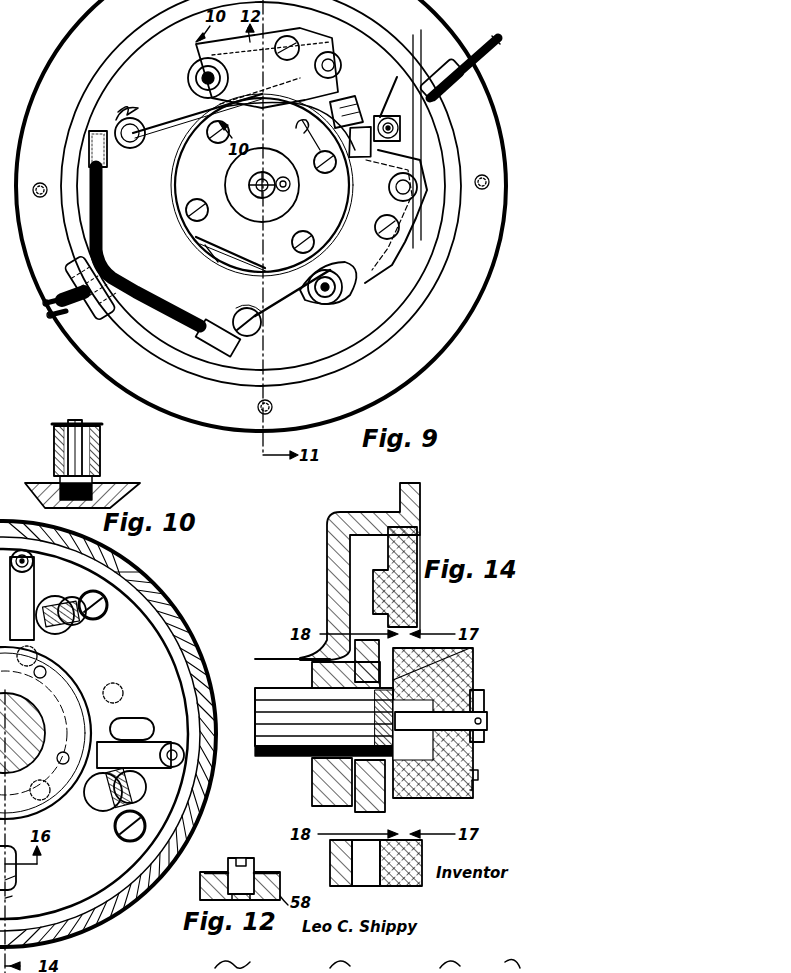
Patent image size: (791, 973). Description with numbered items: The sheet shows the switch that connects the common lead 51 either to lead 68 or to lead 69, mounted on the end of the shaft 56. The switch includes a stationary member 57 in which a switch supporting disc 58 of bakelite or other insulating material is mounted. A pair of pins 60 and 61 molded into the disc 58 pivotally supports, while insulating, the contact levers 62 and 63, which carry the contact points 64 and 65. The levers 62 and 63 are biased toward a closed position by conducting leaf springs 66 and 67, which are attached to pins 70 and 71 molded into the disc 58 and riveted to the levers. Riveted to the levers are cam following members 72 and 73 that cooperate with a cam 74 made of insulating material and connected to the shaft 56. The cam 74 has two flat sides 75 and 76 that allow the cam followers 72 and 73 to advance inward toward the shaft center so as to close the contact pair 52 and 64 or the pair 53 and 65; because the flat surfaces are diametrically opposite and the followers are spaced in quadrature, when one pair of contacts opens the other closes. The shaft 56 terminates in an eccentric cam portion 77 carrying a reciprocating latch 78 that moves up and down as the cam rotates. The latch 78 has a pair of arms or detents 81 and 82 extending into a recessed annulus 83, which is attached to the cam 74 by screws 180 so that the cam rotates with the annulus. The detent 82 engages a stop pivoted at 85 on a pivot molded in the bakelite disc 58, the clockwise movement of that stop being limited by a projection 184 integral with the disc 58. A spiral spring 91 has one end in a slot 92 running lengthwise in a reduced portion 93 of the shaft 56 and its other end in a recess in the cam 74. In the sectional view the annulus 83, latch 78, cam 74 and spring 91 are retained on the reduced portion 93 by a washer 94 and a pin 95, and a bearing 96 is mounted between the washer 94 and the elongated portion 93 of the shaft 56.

In FIG. 9, the common lead 51 is at (484, 36).
In FIG. 9, the contact 52 is at (385, 116).
In FIG. 9, the contact 53 is at (360, 168).
In FIG. 9, the shaft 56 is at (248, 186).
In FIG. 14, the shaft 56 is at (305, 765).
In FIG. 12, the stationary member 57 is at (135, 590).
In FIG. 14, the stationary member 57 is at (335, 522).
In FIG. 9, the switch supporting disc 58 is at (137, 62).
In FIG. 10, the switch supporting disc 58 is at (120, 486).
In FIG. 12, the switch supporting disc 58 is at (130, 618).
In FIG. 14, the switch supporting disc 58 is at (420, 540).
In FIG. 9, the pin 60 is at (190, 79).
In FIG. 10, the pin 60 is at (74, 420).
In FIG. 9, the pin 61 is at (343, 293).
In FIG. 9, the contact lever 62 is at (330, 43).
In FIG. 10, the contact lever 62 is at (97, 430).
In FIG. 9, the contact lever 63 is at (378, 262).
In FIG. 9, the contact point 64 is at (338, 102).
In FIG. 9, the contact point 65 is at (400, 148).
In FIG. 9, the conducting leaf spring 66 is at (168, 118).
In FIG. 9, the conducting leaf spring 67 is at (268, 312).
In FIG. 9, the lead 68 is at (110, 220).
In FIG. 9, the lead 69 is at (150, 296).
In FIG. 9, the pin 70 is at (132, 148).
In FIG. 9, the pin 71 is at (236, 315).
In FIG. 9, the cam following member 72 is at (295, 130).
In FIG. 9, the cam following member 73 is at (350, 208).
In FIG. 9, the cam 74 is at (200, 241).
In FIG. 14, the cam 74 is at (458, 664).
In FIG. 9, the flat side 75 is at (308, 138).
In FIG. 9, the flat side 76 is at (217, 265).
In FIG. 12, the eccentric cam portion 77 is at (115, 693).
In FIG. 14, the reciprocating latch 78 is at (372, 698).
In FIG. 12, the arm or detent 81 is at (0, 662).
In FIG. 14, the arm or detent 81 is at (355, 676).
In FIG. 12, the arm or detent 82 is at (12, 815).
In FIG. 14, the arm or detent 82 is at (360, 806).
In FIG. 12, the recessed annulus 83 is at (62, 700).
In FIG. 14, the recessed annulus 83 is at (356, 656).
In FIG. 12, the pivot 85 is at (8, 898).
In FIG. 14, the spiral spring 91 is at (450, 668).
In FIG. 14, the slot 92 is at (484, 702).
In FIG. 14, the reduced portion 93 is at (484, 732).
In FIG. 14, the washer 94 is at (470, 694).
In FIG. 14, the pin 95 is at (486, 720).
In FIG. 14, the bearing 96 is at (470, 757).
In FIG. 9, the screws 180 is at (188, 212).
In FIG. 12, the screws 180 is at (65, 752).
In FIG. 14, the screws 180 is at (474, 790).
In FIG. 12, the projection 184 is at (12, 880).